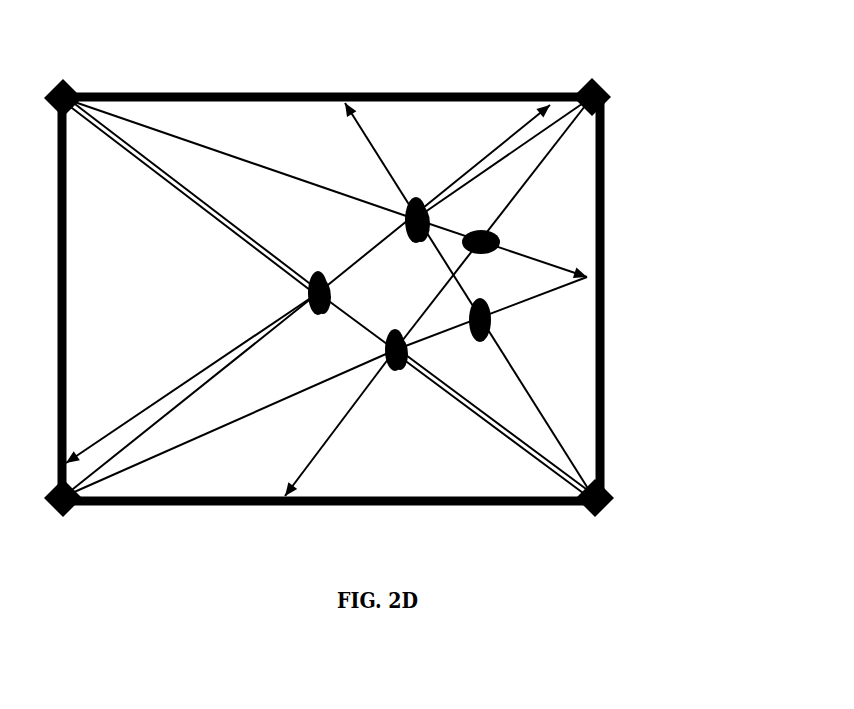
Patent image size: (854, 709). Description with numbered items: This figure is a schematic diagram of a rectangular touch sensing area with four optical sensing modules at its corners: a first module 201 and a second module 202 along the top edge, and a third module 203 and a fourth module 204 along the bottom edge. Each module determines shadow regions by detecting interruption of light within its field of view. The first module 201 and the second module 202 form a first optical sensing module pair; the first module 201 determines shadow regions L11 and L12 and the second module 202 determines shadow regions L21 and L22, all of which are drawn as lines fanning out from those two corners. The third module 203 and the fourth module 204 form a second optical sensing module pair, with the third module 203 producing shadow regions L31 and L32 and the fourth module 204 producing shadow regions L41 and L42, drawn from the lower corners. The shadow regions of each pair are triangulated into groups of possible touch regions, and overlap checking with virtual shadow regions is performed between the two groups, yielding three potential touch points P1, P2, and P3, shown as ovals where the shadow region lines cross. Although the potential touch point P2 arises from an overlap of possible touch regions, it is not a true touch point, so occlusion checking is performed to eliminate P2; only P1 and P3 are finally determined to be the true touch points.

The module 1 201 is at (144, 81).
The module 2 202 is at (606, 80).
The module 3 203 is at (145, 521).
The module 4 204 is at (599, 520).
The shadow region L11 is at (239, 158).
The shadow region L12 is at (191, 195).
The shadow region L21 is at (455, 195).
The shadow region L22 is at (493, 223).
The shadow region L31 is at (229, 423).
The shadow region L32 is at (190, 395).
The shadow region L41 is at (495, 424).
The shadow region L42 is at (469, 300).
The potential touch point P1 is at (390, 220).
The potential touch point P2 is at (295, 293).
The potential touch point P3 is at (400, 368).